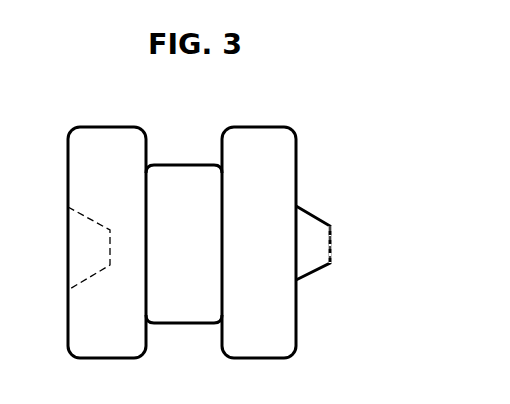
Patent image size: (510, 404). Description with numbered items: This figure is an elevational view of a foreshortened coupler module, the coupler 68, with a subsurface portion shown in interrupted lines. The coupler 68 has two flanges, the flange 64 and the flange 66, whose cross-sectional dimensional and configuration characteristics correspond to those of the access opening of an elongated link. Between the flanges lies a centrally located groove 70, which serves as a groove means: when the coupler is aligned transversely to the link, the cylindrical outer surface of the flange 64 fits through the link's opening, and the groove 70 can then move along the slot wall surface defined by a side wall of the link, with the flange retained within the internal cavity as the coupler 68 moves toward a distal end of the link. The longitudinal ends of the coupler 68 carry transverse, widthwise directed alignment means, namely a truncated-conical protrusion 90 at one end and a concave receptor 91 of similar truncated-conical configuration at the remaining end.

The flange 64 is at (117, 138).
The flange 66 is at (266, 136).
The groove 70 is at (185, 177).
The coupler 68 is at (210, 213).
The alignment protrusion 90 is at (320, 247).
The concave receptor 91 is at (87, 263).